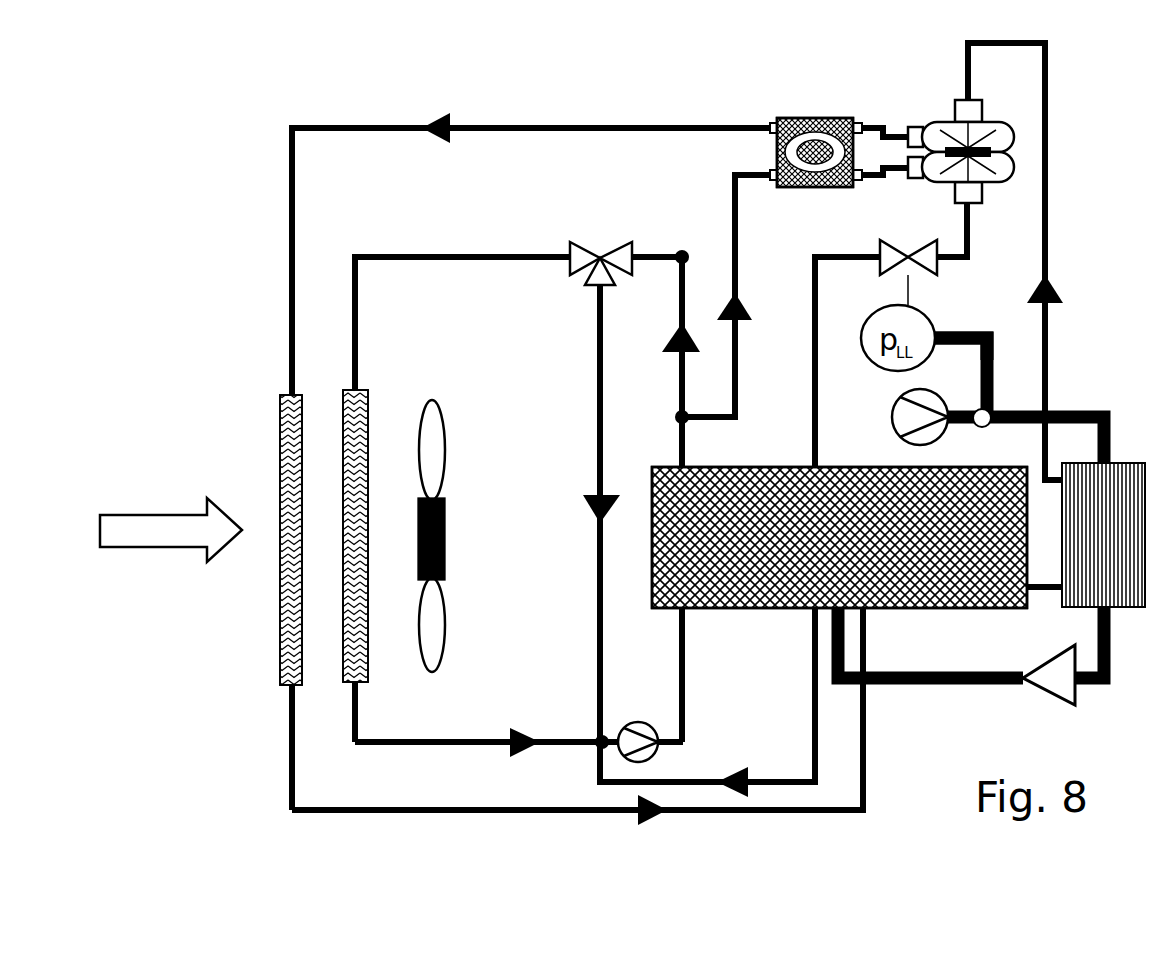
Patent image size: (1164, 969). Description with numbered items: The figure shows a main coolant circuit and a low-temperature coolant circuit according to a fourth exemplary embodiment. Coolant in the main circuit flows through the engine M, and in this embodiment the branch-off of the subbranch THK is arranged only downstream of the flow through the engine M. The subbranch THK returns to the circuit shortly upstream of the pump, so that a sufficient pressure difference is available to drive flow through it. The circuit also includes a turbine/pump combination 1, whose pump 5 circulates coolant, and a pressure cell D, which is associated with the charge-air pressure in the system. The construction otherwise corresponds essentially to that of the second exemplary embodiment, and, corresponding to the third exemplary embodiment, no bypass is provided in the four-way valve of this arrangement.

The turbine/pump combination 1 is at (1032, 108).
The pump 5 is at (945, 128).
The subbranch THK is at (735, 202).
The pressure cell D is at (922, 337).
The engine M is at (893, 540).